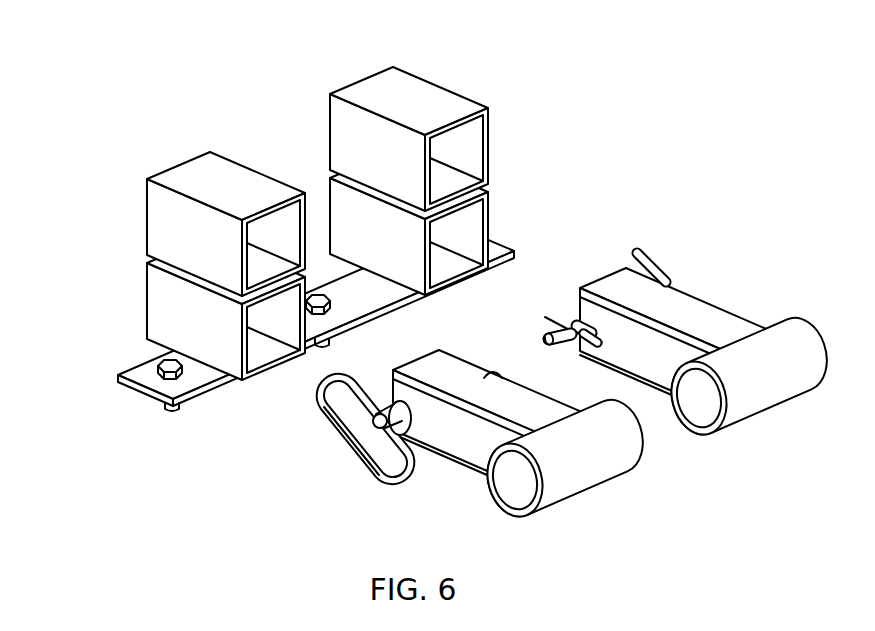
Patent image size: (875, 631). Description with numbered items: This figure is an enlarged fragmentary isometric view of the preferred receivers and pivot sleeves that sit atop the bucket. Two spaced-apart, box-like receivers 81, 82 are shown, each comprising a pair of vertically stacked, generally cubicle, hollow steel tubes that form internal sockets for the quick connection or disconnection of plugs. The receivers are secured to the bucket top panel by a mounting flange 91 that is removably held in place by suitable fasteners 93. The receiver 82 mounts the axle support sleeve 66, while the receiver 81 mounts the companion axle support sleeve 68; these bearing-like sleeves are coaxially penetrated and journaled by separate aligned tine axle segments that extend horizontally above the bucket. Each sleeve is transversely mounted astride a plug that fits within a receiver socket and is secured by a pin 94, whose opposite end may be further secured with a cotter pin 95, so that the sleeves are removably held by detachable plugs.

The axle support sleeve 66 is at (568, 462).
The axle support sleeve 68 is at (788, 373).
The receiver 81 is at (435, 113).
The receiver 82 is at (228, 183).
The mounting flange 91 is at (210, 383).
The fasteners 93 is at (160, 368).
The pin 94 is at (382, 487).
The cotter pins 95 is at (553, 320).